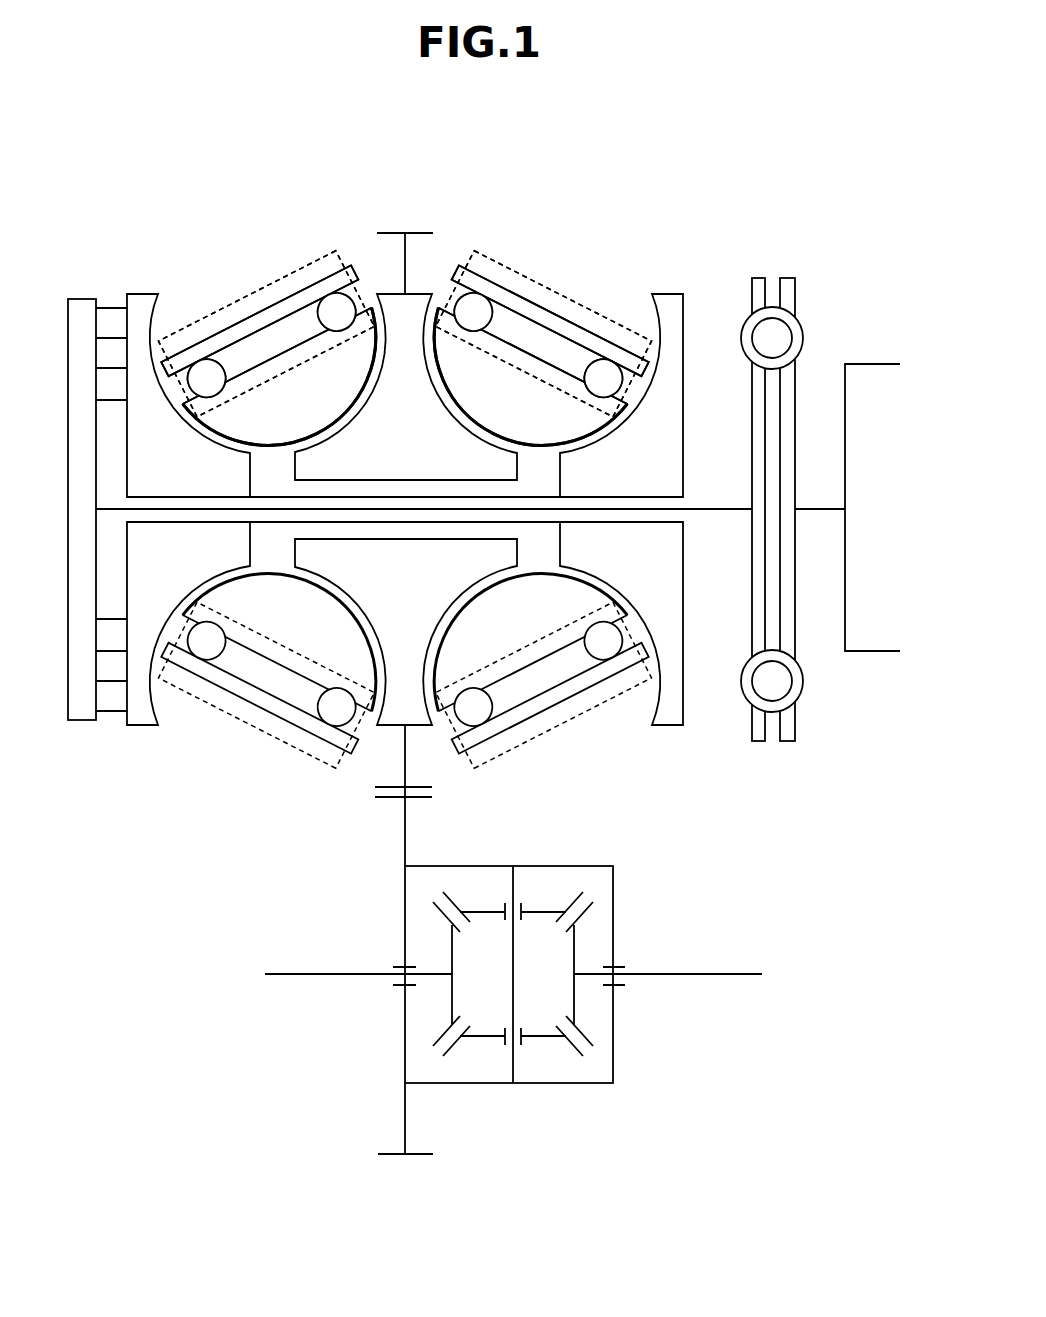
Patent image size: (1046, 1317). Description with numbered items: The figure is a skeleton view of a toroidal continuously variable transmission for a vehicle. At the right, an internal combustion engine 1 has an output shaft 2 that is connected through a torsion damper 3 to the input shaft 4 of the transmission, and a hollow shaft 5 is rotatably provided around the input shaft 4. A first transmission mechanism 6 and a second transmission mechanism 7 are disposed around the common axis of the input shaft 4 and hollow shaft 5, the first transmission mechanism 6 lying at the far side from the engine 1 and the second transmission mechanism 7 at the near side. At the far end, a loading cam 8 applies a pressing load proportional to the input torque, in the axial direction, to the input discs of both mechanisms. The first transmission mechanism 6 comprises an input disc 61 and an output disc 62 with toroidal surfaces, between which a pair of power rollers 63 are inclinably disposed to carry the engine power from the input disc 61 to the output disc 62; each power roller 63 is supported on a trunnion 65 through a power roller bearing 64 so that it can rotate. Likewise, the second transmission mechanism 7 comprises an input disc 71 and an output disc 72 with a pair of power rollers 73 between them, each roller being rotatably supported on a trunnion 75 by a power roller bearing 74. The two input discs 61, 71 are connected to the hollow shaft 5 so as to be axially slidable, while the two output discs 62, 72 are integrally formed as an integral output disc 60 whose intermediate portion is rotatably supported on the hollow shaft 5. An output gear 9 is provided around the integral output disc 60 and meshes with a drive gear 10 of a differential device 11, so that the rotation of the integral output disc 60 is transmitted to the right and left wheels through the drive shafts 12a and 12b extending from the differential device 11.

The internal combustion engine 1 is at (872, 364).
The output shaft 2 is at (814, 508).
The torsion damper 3 is at (771, 282).
The input shaft 4 is at (715, 508).
The hollow shaft 5 is at (357, 495).
The first transmission mechanism 6 is at (278, 240).
The second transmission mechanism 7 is at (619, 248).
The loading cam 8 is at (108, 288).
The output gear 9 is at (422, 786).
The drive gear 10 is at (422, 800).
The differential device 11 is at (563, 842).
The drive shaft 12a is at (322, 973).
The drive shaft 12b is at (682, 973).
The integral output disc 60 is at (419, 292).
The input disc 61 is at (148, 294).
The output disc 62 is at (297, 395).
The power rollers 63 is at (272, 368).
The power roller bearing 64 is at (206, 368).
The trunnion 65 is at (298, 270).
The input disc 71 is at (668, 303).
The output disc 72 is at (513, 395).
The power rollers 73 is at (515, 360).
The power roller bearing 74 is at (605, 372).
The trunnion 75 is at (533, 277).